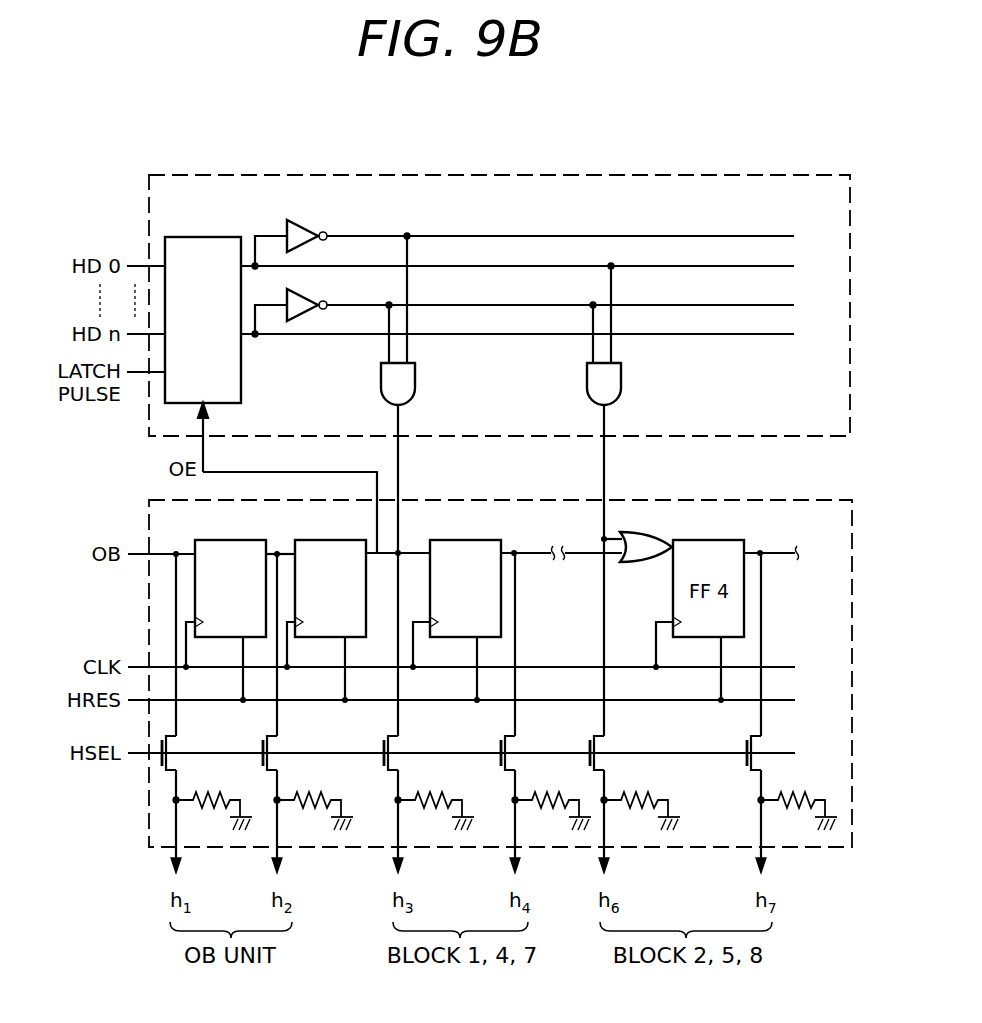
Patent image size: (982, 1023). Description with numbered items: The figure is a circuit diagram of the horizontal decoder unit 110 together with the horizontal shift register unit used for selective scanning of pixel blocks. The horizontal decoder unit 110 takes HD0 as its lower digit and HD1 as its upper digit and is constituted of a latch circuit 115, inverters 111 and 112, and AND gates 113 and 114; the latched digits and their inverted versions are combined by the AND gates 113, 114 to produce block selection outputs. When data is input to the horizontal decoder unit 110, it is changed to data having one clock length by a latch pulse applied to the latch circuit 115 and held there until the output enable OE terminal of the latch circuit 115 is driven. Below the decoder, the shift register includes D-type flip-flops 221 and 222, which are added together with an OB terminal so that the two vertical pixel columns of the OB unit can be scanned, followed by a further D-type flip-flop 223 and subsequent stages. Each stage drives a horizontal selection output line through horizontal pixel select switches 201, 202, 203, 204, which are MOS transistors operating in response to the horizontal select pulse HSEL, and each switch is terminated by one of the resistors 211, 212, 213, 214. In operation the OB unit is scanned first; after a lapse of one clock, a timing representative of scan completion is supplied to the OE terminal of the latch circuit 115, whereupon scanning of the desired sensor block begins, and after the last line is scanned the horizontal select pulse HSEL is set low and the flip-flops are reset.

The horizontal decoder unit 110 is at (495, 176).
The latch circuit 115 is at (225, 237).
The inverter 111 is at (310, 229).
The inverter 112 is at (310, 299).
The AND gate 113 is at (381, 381).
The AND gate 114 is at (586, 381).
The D-type flip-flop 221 is at (225, 540).
The D-type flip-flop 222 is at (325, 540).
The D-type flip-flop 223 is at (459, 540).
The horizontal pixel select switch 201 is at (181, 746).
The horizontal pixel select switch 202 is at (282, 746).
The horizontal pixel select switch 203 is at (404, 746).
The horizontal pixel select switch 204 is at (520, 746).
The resistor 211 is at (206, 794).
The resistor 212 is at (307, 794).
The resistor 213 is at (428, 794).
The resistor 214 is at (534, 794).